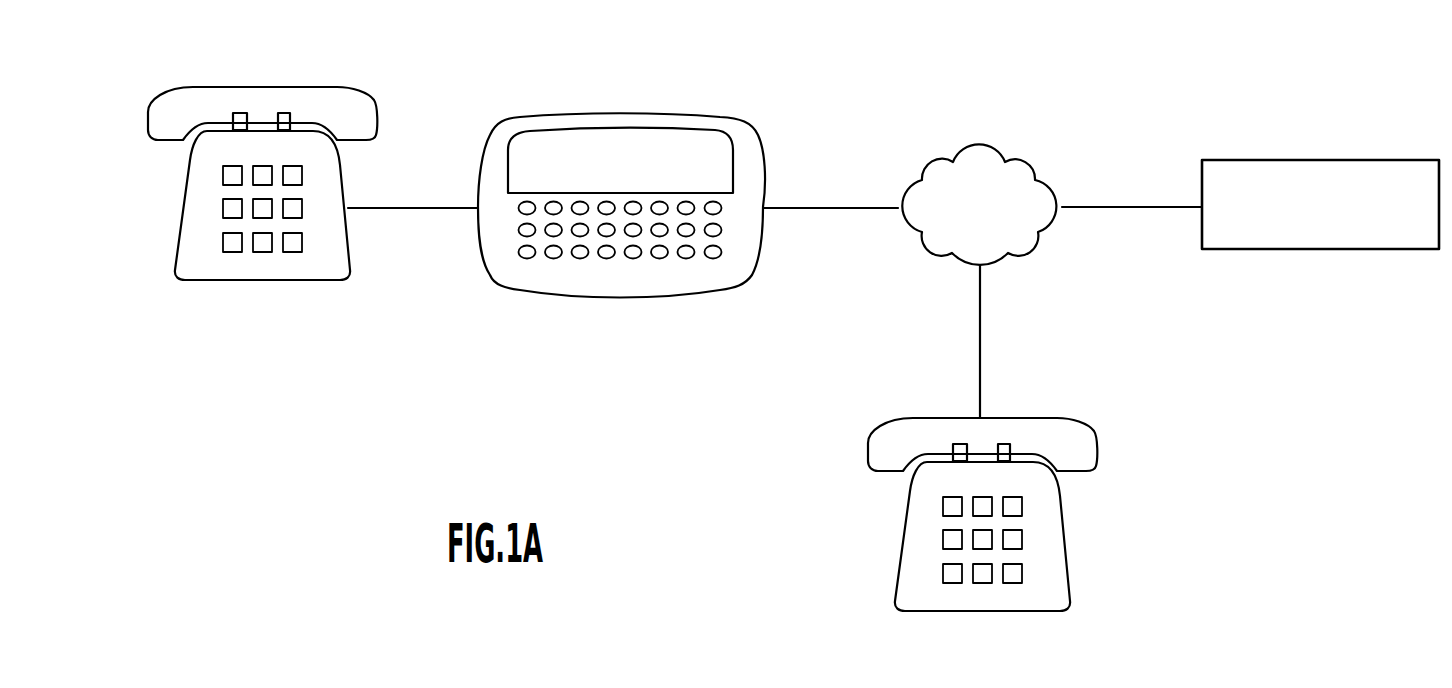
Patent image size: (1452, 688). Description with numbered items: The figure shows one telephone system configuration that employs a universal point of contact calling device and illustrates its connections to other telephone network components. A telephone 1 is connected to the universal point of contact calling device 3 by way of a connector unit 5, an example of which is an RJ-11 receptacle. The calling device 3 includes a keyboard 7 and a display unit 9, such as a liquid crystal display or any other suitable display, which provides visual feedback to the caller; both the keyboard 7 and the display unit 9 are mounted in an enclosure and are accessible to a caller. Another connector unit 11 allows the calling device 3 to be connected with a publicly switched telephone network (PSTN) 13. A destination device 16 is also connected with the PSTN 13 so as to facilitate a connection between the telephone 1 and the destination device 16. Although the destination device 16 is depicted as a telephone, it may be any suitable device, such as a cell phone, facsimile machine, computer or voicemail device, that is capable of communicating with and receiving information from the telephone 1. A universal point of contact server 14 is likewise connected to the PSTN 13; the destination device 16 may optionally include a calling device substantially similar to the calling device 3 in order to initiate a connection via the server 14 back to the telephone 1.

The telephone 1 is at (183, 216).
The universal point of contact calling device 3 is at (620, 201).
The connector unit 5 is at (477, 206).
The keyboard 7 is at (722, 230).
The display unit 9 is at (603, 157).
The connector unit 11 is at (765, 206).
The publicly switched telephone network (PSTN) 13 is at (970, 146).
The server 14 is at (1268, 161).
The destination device 16 is at (903, 547).